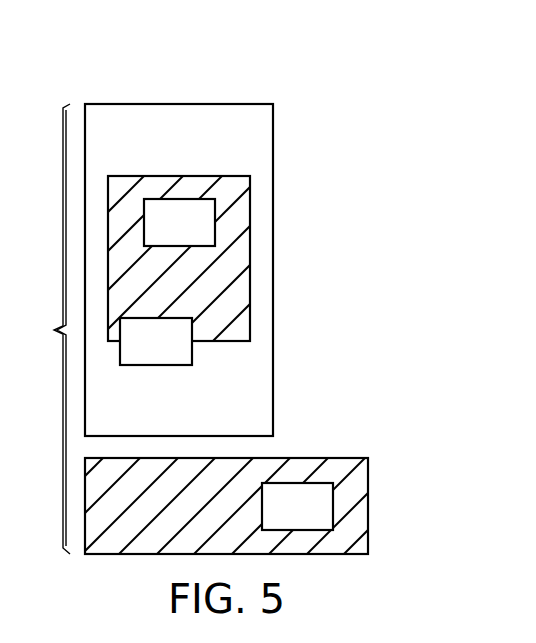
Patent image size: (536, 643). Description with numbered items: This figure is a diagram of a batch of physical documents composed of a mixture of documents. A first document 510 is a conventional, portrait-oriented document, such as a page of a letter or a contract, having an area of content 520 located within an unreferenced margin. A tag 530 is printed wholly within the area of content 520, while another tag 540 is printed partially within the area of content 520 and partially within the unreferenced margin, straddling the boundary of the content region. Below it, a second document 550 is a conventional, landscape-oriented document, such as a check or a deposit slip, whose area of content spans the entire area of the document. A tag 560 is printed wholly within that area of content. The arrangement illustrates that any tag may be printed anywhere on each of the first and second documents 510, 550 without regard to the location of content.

The first document 510 is at (178, 90).
The area of content 520 is at (228, 342).
The tag 530 is at (178, 198).
The tag 540 is at (155, 366).
The second document 550 is at (369, 483).
The tag 560 is at (334, 505).